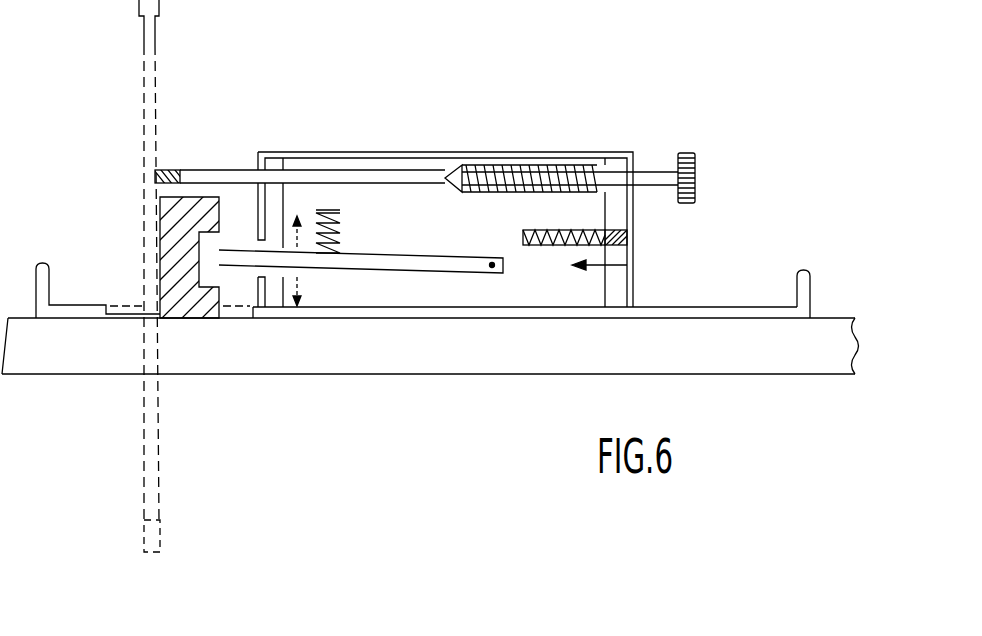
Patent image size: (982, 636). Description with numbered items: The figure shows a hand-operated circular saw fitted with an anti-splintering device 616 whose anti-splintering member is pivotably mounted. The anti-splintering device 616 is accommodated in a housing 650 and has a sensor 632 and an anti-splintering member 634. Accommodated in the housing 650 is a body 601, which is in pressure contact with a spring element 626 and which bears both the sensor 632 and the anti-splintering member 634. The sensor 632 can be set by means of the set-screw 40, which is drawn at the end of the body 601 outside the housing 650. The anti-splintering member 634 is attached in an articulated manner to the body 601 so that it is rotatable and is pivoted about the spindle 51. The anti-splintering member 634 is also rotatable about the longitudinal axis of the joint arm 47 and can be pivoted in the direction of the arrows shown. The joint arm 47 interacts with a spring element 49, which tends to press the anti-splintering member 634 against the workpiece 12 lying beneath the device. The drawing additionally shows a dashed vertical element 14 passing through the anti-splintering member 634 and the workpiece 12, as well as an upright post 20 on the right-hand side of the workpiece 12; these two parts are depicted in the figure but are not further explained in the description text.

The workpiece 12 is at (797, 360).
The pin 14 is at (160, 533).
The post 20 is at (805, 290).
The set-screw 40 is at (693, 163).
The joint arm 47 is at (433, 257).
The spring element 49 is at (341, 216).
The spindle 51 is at (492, 265).
The body 601 is at (586, 207).
The anti-splintering device 616 is at (583, 93).
The spring element 626 is at (630, 247).
The sensor 632 is at (168, 165).
The anti-splintering member 634 is at (198, 200).
The housing 650 is at (412, 150).